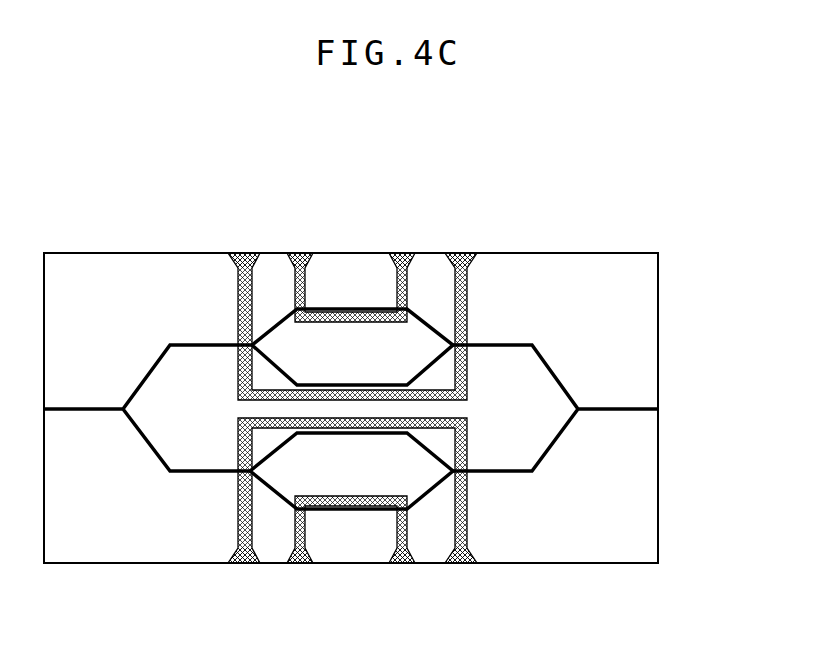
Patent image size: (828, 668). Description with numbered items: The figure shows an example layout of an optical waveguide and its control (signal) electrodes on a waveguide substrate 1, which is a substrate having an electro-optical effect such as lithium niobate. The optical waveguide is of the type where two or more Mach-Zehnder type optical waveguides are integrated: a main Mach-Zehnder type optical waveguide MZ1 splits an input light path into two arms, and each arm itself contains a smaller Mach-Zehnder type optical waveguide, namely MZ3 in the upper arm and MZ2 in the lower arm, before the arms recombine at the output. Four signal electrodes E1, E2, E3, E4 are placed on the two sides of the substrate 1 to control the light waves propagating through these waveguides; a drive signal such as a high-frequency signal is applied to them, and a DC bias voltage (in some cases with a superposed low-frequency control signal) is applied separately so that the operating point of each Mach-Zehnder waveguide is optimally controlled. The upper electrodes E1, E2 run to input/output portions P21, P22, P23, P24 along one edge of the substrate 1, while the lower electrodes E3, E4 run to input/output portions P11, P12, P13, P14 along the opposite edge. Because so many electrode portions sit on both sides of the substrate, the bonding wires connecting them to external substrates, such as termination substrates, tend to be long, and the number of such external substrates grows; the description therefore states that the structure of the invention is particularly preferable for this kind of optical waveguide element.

The waveguide substrate 1 is at (134, 326).
The Mach-Zehnder type optical waveguide MZ1 is at (575, 385).
The Mach-Zehnder type optical waveguide MZ2 is at (437, 500).
The Mach-Zehnder type optical waveguide MZ3 is at (433, 315).
The signal electrode E1 is at (351, 287).
The signal electrode E2 is at (352, 326).
The signal electrode E3 is at (352, 490).
The signal electrode E4 is at (351, 529).
The input/output portion of signal electrode P11 is at (463, 572).
The input/output portion of signal electrode P12 is at (395, 572).
The input/output portion of signal electrode P13 is at (302, 572).
The input/output portion of signal electrode P14 is at (238, 572).
The input/output portion of signal electrode P21 is at (467, 249).
The input/output portion of signal electrode P22 is at (402, 249).
The input/output portion of signal electrode P23 is at (306, 249).
The input/output portion of signal electrode P24 is at (241, 249).